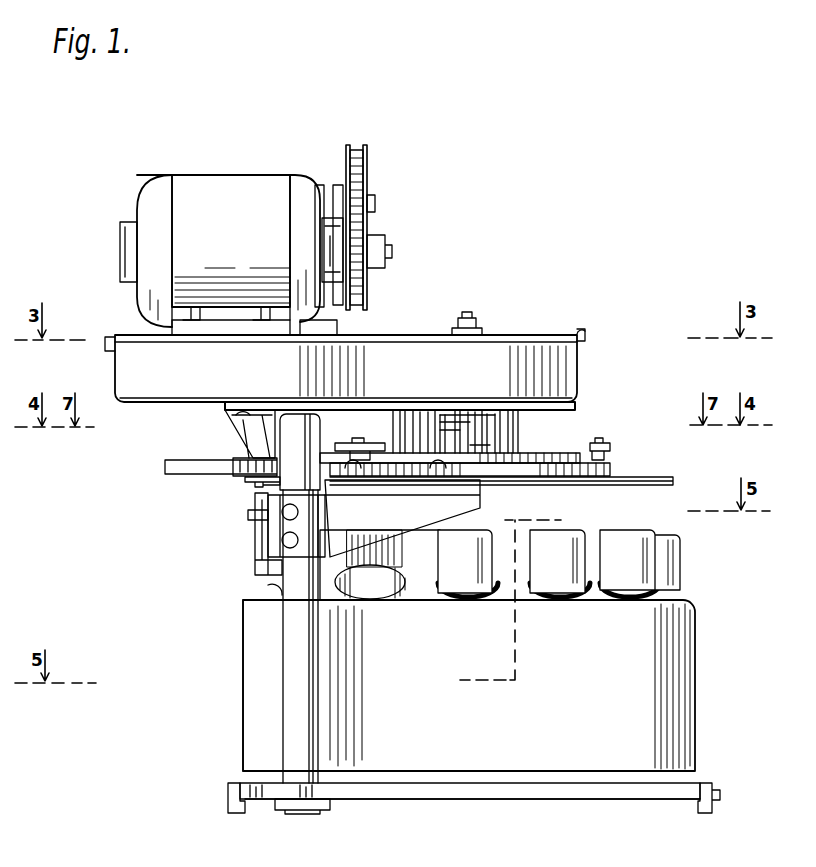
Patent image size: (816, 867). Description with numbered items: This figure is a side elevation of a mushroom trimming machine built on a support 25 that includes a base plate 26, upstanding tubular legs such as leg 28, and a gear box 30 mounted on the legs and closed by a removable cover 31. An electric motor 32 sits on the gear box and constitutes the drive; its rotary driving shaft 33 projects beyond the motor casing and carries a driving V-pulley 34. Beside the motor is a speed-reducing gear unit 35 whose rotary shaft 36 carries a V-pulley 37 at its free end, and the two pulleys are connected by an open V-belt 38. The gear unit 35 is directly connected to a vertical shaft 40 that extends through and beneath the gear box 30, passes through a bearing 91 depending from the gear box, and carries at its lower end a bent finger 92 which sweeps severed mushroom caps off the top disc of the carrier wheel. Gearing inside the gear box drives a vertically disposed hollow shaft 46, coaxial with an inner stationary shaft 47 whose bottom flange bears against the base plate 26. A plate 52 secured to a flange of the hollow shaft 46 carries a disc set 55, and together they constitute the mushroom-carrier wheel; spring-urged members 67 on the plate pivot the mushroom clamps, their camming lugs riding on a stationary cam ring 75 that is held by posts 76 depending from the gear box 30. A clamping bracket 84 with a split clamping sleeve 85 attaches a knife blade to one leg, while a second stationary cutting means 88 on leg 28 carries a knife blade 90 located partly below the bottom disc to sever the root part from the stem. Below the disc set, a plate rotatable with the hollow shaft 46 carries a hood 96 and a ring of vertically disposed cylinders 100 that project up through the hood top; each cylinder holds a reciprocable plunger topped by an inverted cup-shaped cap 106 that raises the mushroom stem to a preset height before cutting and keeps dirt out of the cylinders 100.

The support 25 is at (382, 809).
The base plate 26 is at (655, 793).
The tubular leg 28 is at (283, 723).
The gear box 30 is at (580, 364).
The removable cover 31 is at (584, 334).
The electric motor 32 is at (152, 194).
The rotary driving shaft 33 is at (392, 248).
The driving V-pulley 34 is at (366, 297).
The speed-reducing gear unit 35 is at (322, 167).
The rotary shaft 36 is at (375, 206).
The V-pulley 37 is at (367, 158).
The open V-belt 38 is at (362, 187).
The vertical shaft 40 is at (252, 489).
The hollow shaft 46 is at (482, 412).
The stationary shaft 47 is at (468, 319).
The plate 52 is at (606, 465).
The disc set 55 is at (676, 477).
The member 67 is at (362, 430).
The stationary cam ring 75 is at (540, 453).
The posts 76 is at (440, 423).
The clamping bracket 84 is at (290, 512).
The split clamping sleeve 85 is at (262, 548).
The second stationary cutting means 88 is at (256, 521).
The knife blade 90 is at (425, 490).
The bearing 91 is at (243, 430).
The bent finger 92 is at (165, 466).
The hood 96 is at (706, 665).
The cylinders 100 is at (372, 591).
The inverted cup-shaped cap 106 is at (675, 539).